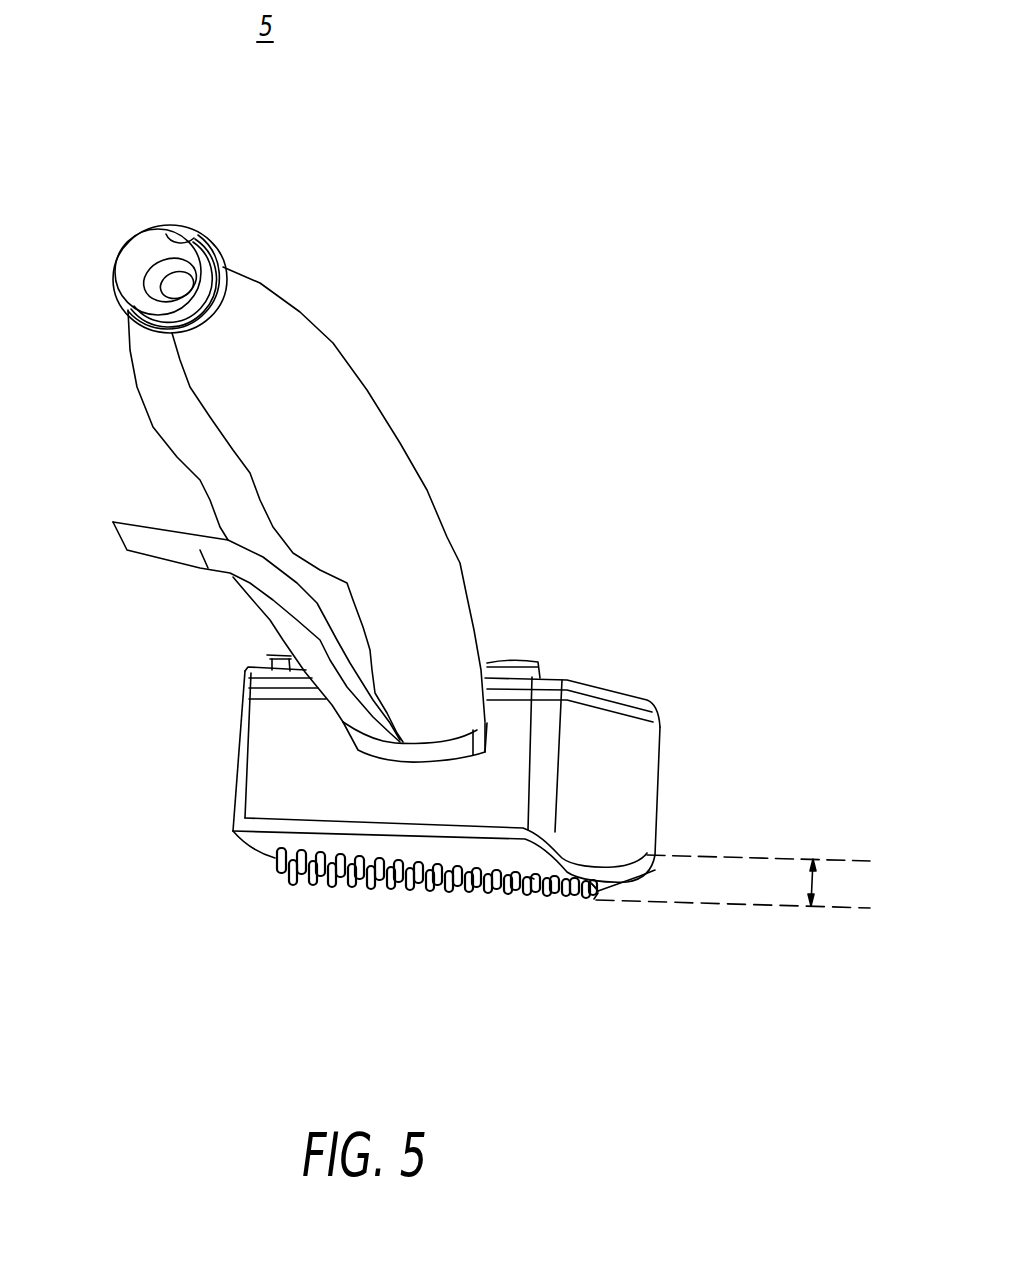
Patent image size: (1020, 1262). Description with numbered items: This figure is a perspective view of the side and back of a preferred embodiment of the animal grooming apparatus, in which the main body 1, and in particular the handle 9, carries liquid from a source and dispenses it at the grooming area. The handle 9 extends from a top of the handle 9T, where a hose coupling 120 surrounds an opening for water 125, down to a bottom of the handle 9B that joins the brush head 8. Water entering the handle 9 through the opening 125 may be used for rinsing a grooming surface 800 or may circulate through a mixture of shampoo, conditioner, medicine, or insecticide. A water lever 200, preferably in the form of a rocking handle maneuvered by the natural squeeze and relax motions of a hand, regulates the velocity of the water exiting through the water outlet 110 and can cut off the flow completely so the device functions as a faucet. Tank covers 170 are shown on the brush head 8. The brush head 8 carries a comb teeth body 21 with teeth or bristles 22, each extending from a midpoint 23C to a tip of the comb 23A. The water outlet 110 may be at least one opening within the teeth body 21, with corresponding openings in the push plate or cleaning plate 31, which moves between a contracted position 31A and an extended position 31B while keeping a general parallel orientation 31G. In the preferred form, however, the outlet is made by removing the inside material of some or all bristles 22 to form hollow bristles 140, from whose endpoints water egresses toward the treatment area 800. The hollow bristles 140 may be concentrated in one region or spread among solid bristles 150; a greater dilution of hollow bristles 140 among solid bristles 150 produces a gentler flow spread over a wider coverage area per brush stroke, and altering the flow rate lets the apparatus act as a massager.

The main body 1 is at (397, 240).
The brush head 8 is at (652, 658).
The handle 9 is at (430, 400).
The top of the handle 9T is at (334, 343).
The bottom of the handle 9B is at (152, 388).
The comb teeth body 21 is at (268, 865).
The teeth or bristles or tapered bristles 22 is at (598, 892).
The tip of the comb 23A is at (590, 893).
The midpoint 23C is at (597, 895).
The push plate or cleaning plate 31 is at (650, 876).
The contracted position 31A is at (757, 858).
The extended position 31B is at (758, 905).
The general parallel orientation 31G is at (813, 883).
The water outlet 110 is at (420, 910).
The hose coupling 120 is at (190, 232).
The opening for water 125 is at (142, 288).
The hollow bristles 140 is at (525, 904).
The solid bristles 150 is at (310, 890).
The tank covers 170 is at (273, 655).
The water lever 200 is at (150, 545).
The grooming surface 800 is at (545, 932).